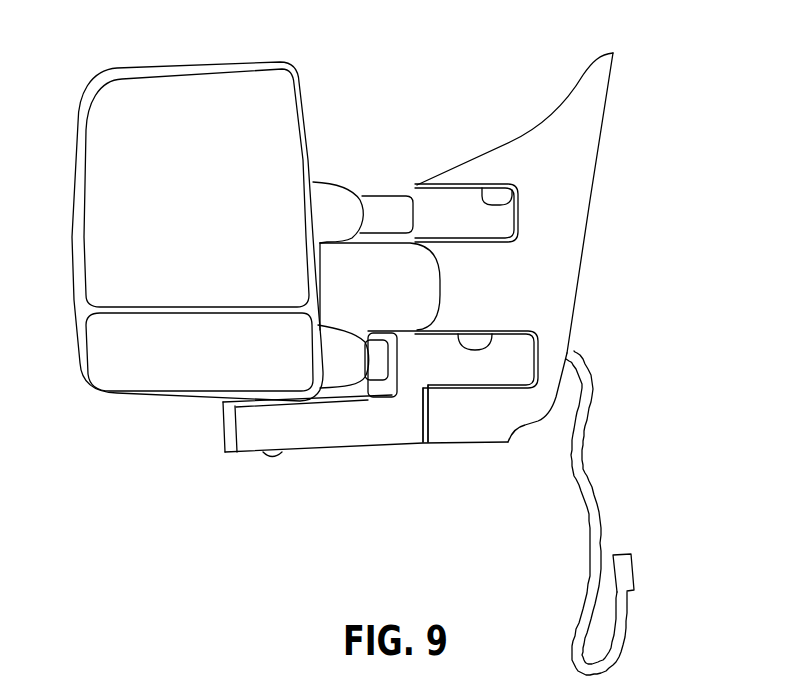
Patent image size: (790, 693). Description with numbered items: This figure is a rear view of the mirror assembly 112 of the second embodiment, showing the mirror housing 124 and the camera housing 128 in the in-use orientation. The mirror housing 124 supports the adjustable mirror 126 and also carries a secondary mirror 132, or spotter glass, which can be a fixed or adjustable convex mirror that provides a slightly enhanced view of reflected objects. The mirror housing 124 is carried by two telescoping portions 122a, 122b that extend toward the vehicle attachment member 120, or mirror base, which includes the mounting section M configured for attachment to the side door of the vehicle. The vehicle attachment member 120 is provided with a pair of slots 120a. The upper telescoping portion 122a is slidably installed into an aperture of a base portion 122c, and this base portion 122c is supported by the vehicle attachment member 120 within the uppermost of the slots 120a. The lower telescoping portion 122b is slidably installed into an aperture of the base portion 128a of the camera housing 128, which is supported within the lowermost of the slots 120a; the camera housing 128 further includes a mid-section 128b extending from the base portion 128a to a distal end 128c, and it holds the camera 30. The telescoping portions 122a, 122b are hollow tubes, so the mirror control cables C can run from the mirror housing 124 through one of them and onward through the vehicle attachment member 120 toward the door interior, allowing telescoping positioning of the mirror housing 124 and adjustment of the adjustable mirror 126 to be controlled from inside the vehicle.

The mirror assembly 112 is at (487, 30).
The mirror housing 124 is at (157, 65).
The adjustable mirror 126 is at (252, 128).
The secondary mirror 132 is at (175, 353).
The telescoping portion 122a is at (385, 212).
The telescoping portion 122b is at (379, 352).
The base portion 122c is at (468, 220).
The vehicle attachment member 120 is at (548, 146).
The slots 120a is at (504, 204).
The camera housing 128 is at (330, 423).
The base portion 128a is at (472, 370).
The mid-section 128b is at (389, 420).
The distal end 128c is at (228, 437).
The camera 30 is at (273, 458).
The mounting section M is at (600, 143).
The mirror control cables C is at (627, 627).